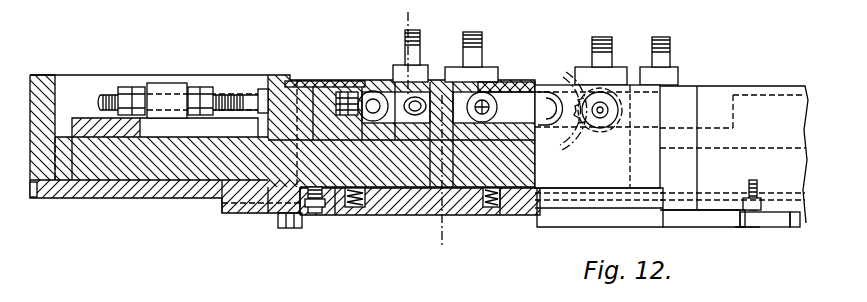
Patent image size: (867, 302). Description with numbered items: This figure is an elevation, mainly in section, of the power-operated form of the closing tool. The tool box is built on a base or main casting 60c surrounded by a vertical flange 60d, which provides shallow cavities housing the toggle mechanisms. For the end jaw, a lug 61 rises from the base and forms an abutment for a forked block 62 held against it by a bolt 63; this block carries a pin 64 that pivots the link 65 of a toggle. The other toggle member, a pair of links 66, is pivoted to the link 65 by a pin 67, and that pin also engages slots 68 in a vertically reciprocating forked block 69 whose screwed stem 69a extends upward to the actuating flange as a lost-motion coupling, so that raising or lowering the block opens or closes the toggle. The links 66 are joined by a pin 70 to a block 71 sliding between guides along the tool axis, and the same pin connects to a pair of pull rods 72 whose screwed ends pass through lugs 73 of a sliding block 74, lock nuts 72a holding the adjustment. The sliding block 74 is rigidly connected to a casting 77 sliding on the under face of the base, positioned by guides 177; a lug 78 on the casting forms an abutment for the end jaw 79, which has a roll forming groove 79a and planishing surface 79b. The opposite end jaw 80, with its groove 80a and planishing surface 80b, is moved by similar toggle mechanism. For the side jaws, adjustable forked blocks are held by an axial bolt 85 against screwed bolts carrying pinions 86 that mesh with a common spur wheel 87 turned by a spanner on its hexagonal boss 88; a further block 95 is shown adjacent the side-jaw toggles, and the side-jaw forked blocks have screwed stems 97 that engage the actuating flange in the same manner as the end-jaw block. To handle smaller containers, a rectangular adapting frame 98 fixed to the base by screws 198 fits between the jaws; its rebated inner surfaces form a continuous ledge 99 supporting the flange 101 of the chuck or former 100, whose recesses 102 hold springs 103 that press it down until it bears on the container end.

The base or main casting 60c is at (195, 170).
The vertical flange 60d is at (40, 84).
The lug 61 is at (313, 84).
The forked block 62 is at (341, 92).
The bolt 63 is at (261, 90).
The pin 64 is at (373, 91).
The link 65 is at (436, 190).
The links 66 is at (437, 177).
The pin 67 is at (427, 92).
The slots 68 is at (402, 73).
The forked block 69 is at (413, 73).
The screwed stem 69a is at (405, 33).
The pin 70 is at (522, 150).
The block 71 is at (477, 82).
The pull rods 72 is at (100, 101).
The lock nuts 72a is at (138, 88).
The lugs 73 is at (168, 83).
The sliding block 74 is at (132, 132).
The casting 77 is at (108, 193).
The lug 78 is at (242, 212).
The end jaw 79 is at (278, 209).
The roll forming groove 79a is at (349, 212).
The planishing surface 79b is at (320, 215).
The end jaw 80 is at (762, 224).
The roll forming groove 80a is at (740, 220).
The planishing surface 80b is at (738, 228).
The bolt 85 is at (601, 119).
The pinions 86 is at (616, 124).
The spur wheel 87 is at (565, 72).
The hexagonal boss 88 is at (548, 123).
The clamp block 95 is at (473, 78).
The screwed stems 97 is at (480, 40).
The adapting frame 98 is at (315, 213).
The ledge 99 is at (326, 206).
The chuck or former 100 is at (490, 210).
The projection or flange 101 is at (352, 209).
The recesses 102 is at (503, 213).
The springs 103 is at (382, 212).
The guides 177 is at (35, 198).
The screws 198 is at (295, 232).